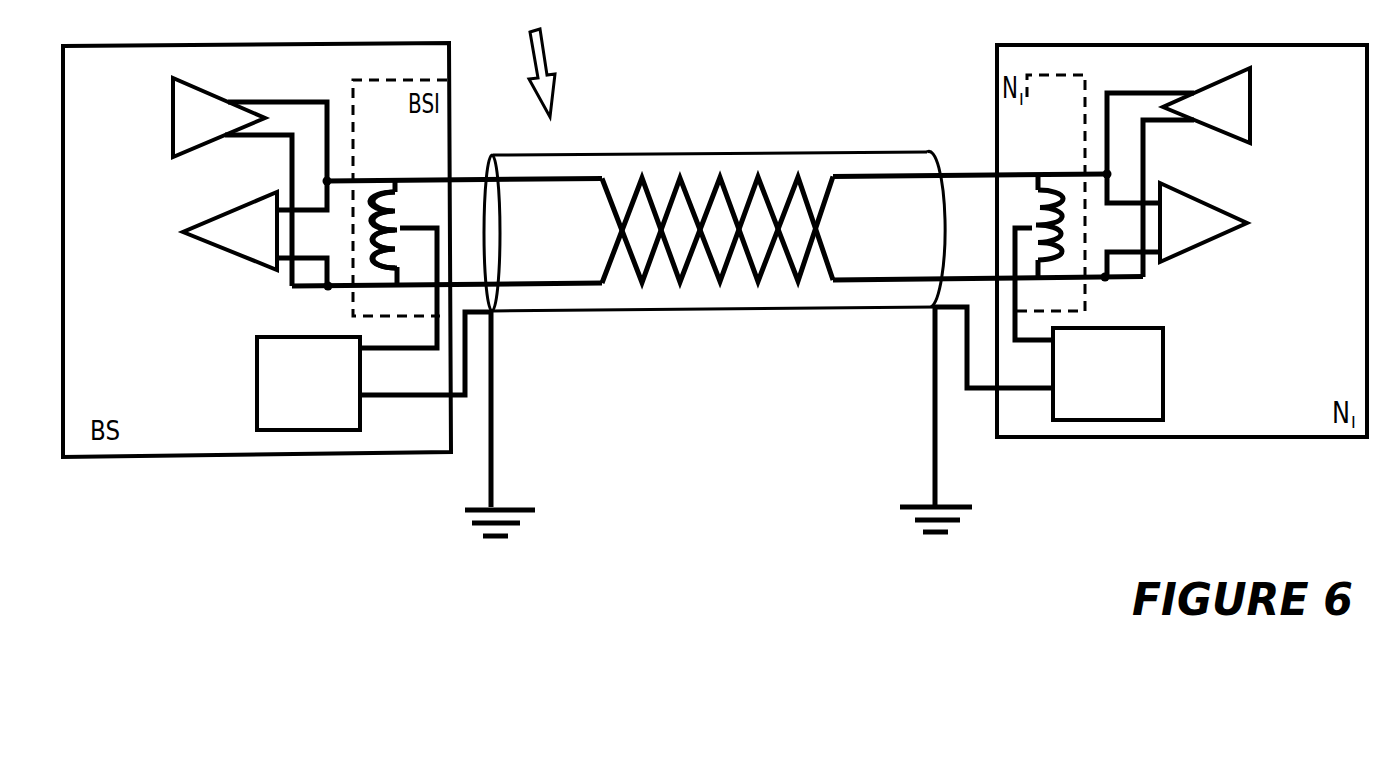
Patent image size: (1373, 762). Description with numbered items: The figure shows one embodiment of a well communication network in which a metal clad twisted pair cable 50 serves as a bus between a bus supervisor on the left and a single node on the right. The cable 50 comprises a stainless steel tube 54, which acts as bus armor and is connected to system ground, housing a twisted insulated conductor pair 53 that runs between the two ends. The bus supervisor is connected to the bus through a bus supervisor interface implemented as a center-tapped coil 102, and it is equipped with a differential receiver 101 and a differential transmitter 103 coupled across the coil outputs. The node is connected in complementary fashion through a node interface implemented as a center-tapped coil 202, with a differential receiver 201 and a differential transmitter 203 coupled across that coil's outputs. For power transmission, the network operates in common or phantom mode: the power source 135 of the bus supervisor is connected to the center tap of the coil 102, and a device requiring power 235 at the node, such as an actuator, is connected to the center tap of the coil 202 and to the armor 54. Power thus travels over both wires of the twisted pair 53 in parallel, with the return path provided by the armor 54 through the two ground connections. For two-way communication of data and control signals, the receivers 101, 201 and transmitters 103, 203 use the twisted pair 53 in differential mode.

The metal clad twisted pair cable 50 is at (516, 62).
The twisted insulated conductor pair 53 is at (869, 182).
The stainless steel tube 54 is at (868, 152).
The differential receiver 101 is at (230, 231).
The coil 102 is at (425, 203).
The differential transmitter 103 is at (219, 117).
The power source 135 is at (308, 383).
The differential receiver 201 is at (1203, 222).
The coil 202 is at (1013, 197).
The differential transmitter 203 is at (1206, 105).
The device requiring power 235 is at (1108, 374).